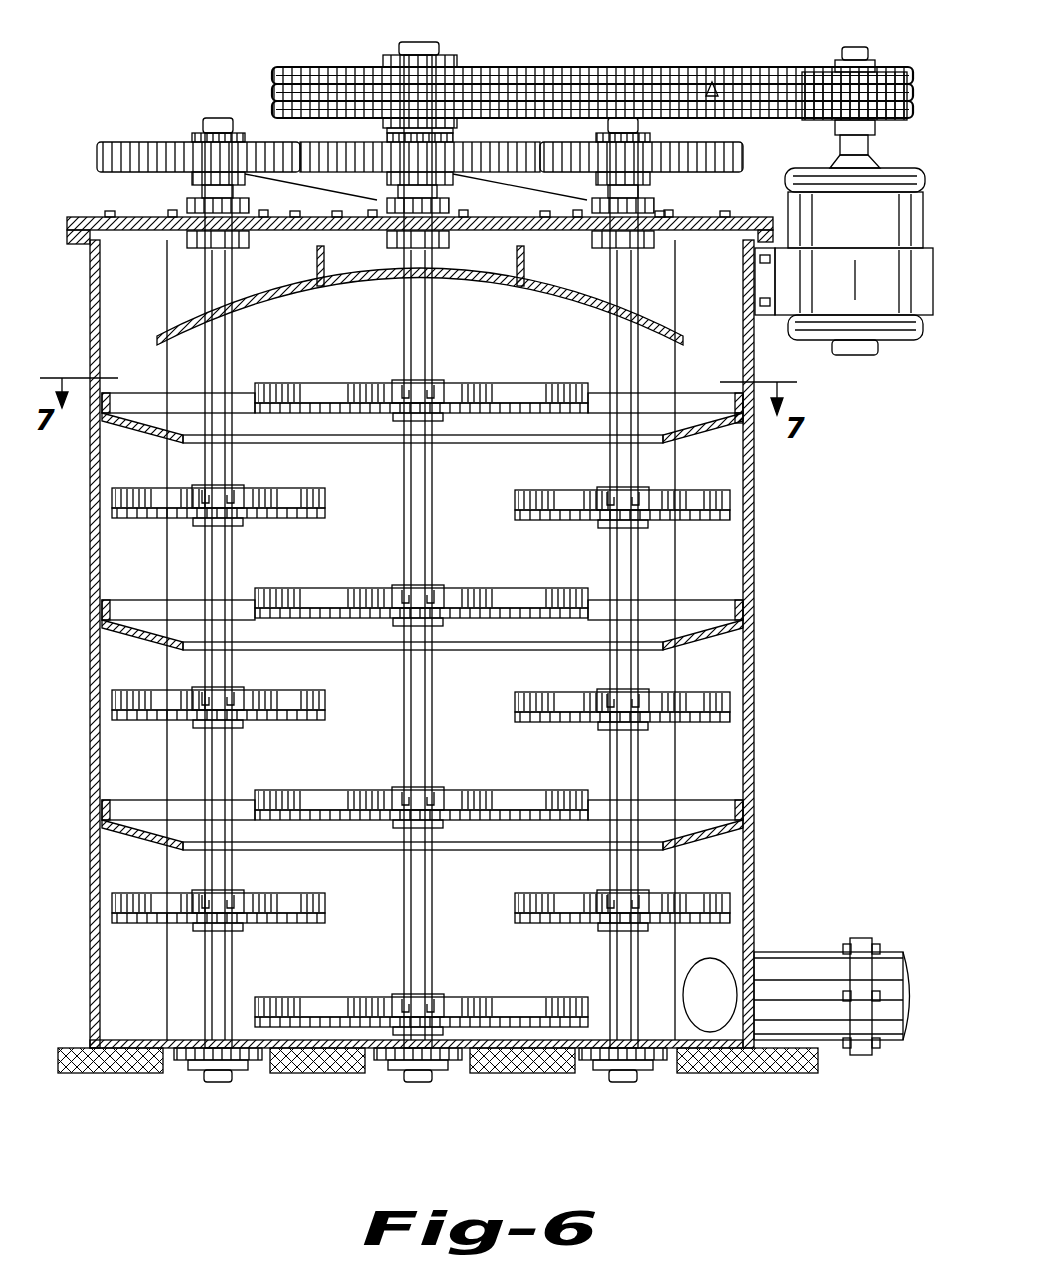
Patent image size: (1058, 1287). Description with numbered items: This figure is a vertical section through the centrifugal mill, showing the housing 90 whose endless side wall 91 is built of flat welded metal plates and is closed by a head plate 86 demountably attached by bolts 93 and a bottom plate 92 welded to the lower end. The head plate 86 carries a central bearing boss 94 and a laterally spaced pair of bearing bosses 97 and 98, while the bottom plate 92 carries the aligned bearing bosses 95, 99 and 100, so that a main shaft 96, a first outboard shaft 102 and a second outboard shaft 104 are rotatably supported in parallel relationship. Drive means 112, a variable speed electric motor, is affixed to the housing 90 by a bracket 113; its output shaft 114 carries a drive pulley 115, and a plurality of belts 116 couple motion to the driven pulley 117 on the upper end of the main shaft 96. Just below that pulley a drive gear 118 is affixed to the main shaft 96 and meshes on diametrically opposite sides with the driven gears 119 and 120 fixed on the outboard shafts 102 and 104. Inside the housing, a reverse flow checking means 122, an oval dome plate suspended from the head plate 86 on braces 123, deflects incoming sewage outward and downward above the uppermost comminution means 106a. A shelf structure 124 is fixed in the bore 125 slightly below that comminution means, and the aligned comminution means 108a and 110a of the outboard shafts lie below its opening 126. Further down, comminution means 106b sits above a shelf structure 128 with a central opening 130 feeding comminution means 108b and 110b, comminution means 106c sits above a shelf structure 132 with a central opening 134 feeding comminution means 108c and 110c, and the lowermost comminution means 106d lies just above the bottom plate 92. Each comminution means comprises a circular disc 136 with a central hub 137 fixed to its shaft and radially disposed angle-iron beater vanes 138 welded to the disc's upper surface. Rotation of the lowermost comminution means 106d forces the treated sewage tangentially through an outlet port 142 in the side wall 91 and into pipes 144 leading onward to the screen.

The head plate 86 is at (688, 217).
The housing 90 is at (778, 685).
The endless side wall 91 is at (756, 732).
The bottom plate 92 is at (140, 1073).
The bolts 93 is at (98, 216).
The bearing boss 94 is at (463, 243).
The bearing boss 95 is at (455, 1075).
The main shaft 96 is at (425, 41).
The bearing boss 97 is at (245, 248).
The bearing boss 98 is at (586, 242).
The bearing boss 99 is at (235, 1072).
The bearing boss 100 is at (655, 1073).
The first outboard shaft 102 is at (205, 125).
The second outboard shaft 104 is at (640, 125).
The comminution means 106a is at (348, 385).
The comminution means 106b is at (350, 590).
The comminution means 106c is at (350, 792).
The comminution means 106d is at (350, 998).
The comminution means 108a is at (312, 487).
The comminution means 108b is at (316, 694).
The comminution means 108c is at (325, 894).
The comminution means 110a is at (540, 490).
The comminution means 110b is at (540, 697).
The comminution means 110c is at (518, 898).
The drive means 112 is at (895, 340).
The bracket 113 is at (776, 320).
The output shaft 114 is at (858, 46).
The drive pulley 115 is at (812, 72).
The belts 116 is at (712, 82).
The driven pulley 117 is at (555, 58).
The drive gear 118 is at (470, 150).
The driven gear 119 is at (132, 143).
The driven gear 120 is at (738, 152).
The reverse flow checking means 122 is at (650, 325).
The braces 123 is at (326, 276).
The shelf structure 124 is at (683, 408).
The bore 125 is at (748, 464).
The opening 126 is at (488, 442).
The shelf structure 128 is at (682, 612).
The central opening 130 is at (478, 650).
The shelf structure 132 is at (682, 815).
The central opening 134 is at (490, 850).
The circular disc 136 is at (380, 414).
The central hub 137 is at (442, 385).
The beater vanes 138 is at (310, 388).
The tangential outlet port 142 is at (690, 970).
The pipes 144 is at (825, 952).